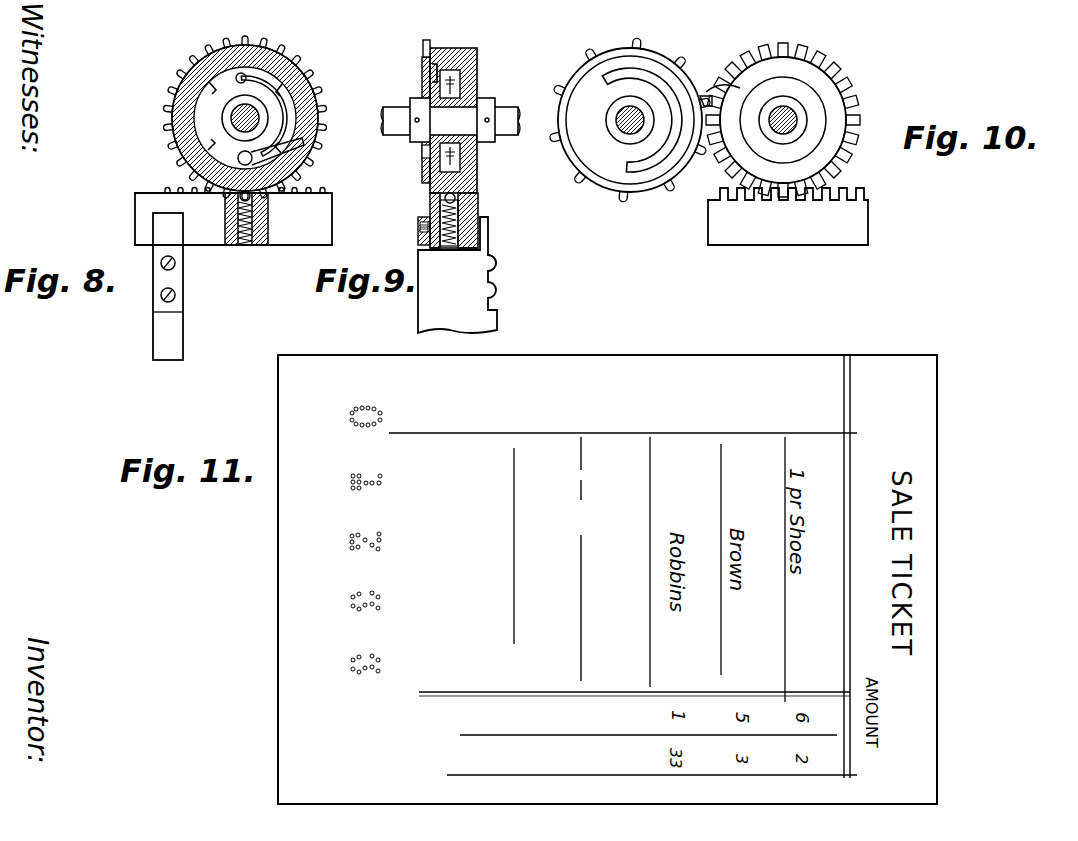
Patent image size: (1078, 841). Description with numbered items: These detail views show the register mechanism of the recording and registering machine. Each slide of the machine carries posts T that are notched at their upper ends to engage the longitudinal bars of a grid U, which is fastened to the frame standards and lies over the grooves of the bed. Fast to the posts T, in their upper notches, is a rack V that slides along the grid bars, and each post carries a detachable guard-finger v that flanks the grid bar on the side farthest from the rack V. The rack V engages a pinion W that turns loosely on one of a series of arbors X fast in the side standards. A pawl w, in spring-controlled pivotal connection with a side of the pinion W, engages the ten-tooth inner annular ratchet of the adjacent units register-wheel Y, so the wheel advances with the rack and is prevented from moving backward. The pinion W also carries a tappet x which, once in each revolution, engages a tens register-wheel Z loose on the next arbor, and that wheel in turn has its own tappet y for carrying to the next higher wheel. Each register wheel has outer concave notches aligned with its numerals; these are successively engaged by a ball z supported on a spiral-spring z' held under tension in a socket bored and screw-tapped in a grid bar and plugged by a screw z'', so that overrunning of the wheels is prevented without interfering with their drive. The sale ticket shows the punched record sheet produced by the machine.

In FIG. 8, the units register-wheel Y is at (190, 76).
In FIG. 9, the units register-wheel Y is at (478, 56).
In FIG. 10, the units register-wheel Y is at (858, 105).
In FIG. 8, the pinion W is at (170, 118).
In FIG. 9, the pinion W is at (438, 48).
In FIG. 10, the pinion W is at (848, 84).
In FIG. 8, the pawl w is at (302, 152).
In FIG. 9, the pawl w is at (425, 152).
In FIG. 8, the arbor X is at (240, 113).
In FIG. 9, the arbor X is at (404, 107).
In FIG. 10, the arbor X is at (617, 120).
In FIG. 9, the tappet x is at (423, 46).
In FIG. 10, the tappet x is at (706, 92).
In FIG. 10, the tappet y is at (612, 62).
In FIG. 10, the tens register-wheel Z is at (638, 62).
In FIG. 8, the rack V is at (170, 190).
In FIG. 9, the rack V is at (430, 208).
In FIG. 10, the rack V is at (788, 216).
In FIG. 8, the grid U is at (137, 200).
In FIG. 9, the grid U is at (472, 248).
In FIG. 8, the guard-finger v is at (162, 228).
In FIG. 9, the guard-finger v is at (490, 250).
In FIG. 8, the ball z is at (264, 221).
In FIG. 9, the ball z is at (468, 208).
In FIG. 8, the spiral-spring z' is at (260, 219).
In FIG. 9, the spiral-spring z' is at (478, 221).
In FIG. 8, the screw z'' is at (250, 236).
In FIG. 9, the screw z'' is at (483, 218).
In FIG. 8, the post T is at (178, 335).
In FIG. 9, the post T is at (457, 275).